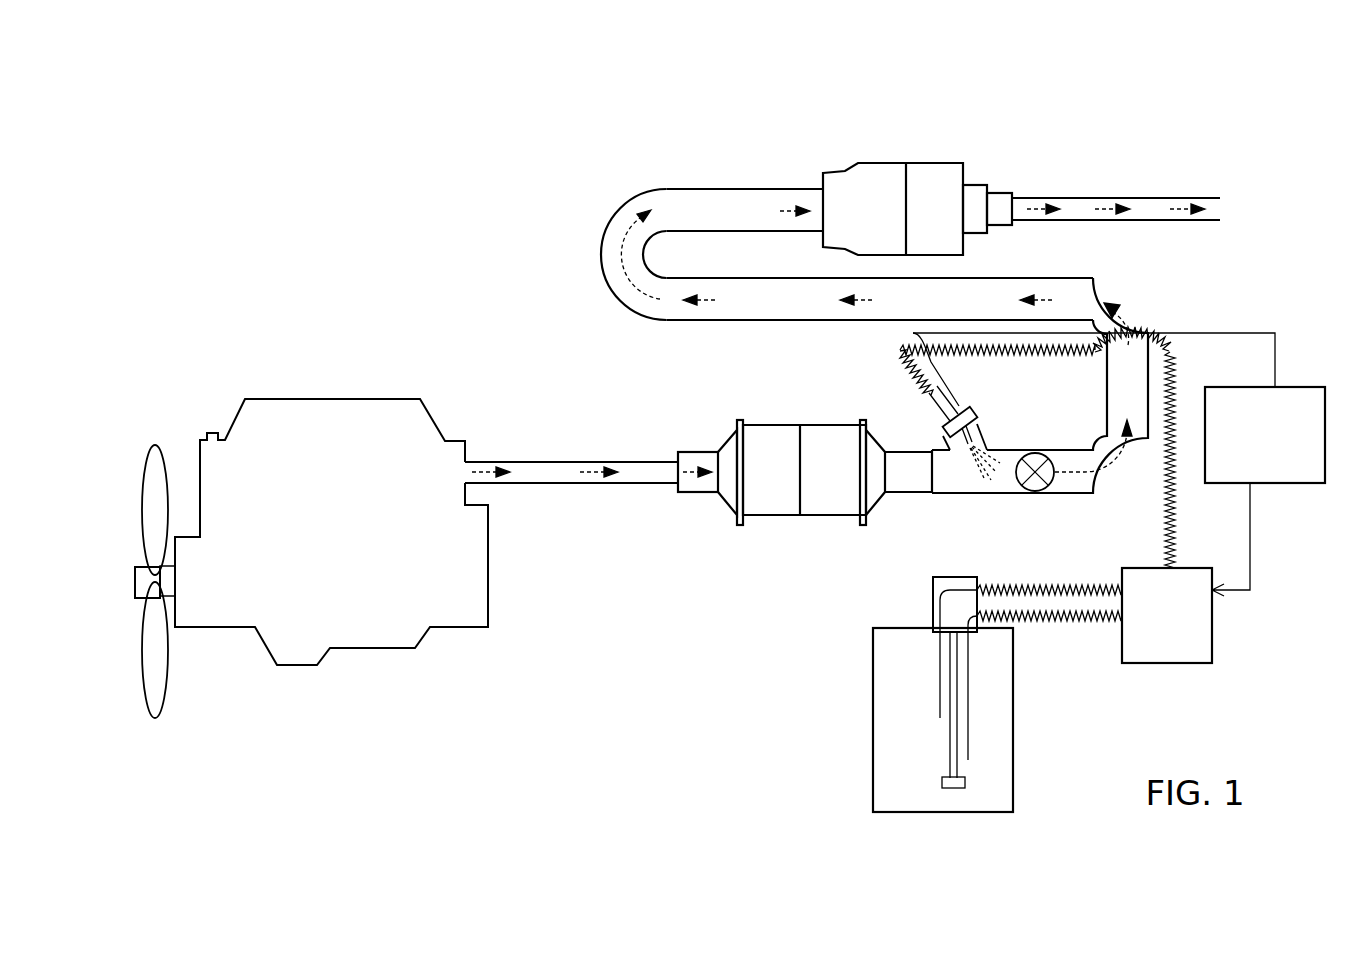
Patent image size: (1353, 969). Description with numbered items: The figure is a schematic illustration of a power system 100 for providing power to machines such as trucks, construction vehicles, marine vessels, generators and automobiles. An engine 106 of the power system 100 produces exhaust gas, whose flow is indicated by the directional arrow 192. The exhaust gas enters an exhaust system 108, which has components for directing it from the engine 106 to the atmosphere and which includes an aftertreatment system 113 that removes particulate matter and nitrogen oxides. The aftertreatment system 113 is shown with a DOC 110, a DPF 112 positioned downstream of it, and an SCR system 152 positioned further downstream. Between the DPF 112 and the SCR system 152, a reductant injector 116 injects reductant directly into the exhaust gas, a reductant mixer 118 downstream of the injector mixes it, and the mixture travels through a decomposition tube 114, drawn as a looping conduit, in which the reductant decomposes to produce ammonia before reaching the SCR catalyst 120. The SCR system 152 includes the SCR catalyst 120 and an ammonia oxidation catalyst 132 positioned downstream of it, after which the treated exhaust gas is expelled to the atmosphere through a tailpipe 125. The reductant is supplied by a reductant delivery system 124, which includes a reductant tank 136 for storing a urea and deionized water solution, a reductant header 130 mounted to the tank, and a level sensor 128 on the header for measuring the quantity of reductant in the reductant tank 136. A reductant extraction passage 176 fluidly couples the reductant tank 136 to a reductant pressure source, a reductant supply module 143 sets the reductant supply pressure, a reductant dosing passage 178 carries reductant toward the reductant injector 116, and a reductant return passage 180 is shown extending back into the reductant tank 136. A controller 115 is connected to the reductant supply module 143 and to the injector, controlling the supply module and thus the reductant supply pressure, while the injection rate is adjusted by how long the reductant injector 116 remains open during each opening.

The power system 100 is at (555, 780).
The engine 106 is at (333, 399).
The exhaust system 108 is at (590, 217).
The DOC 110 is at (777, 515).
The DPF 112 is at (838, 515).
The aftertreatment system 113 is at (788, 622).
The decomposition tube 114 is at (720, 231).
The controller 115 is at (1300, 387).
The reductant injector 116 is at (977, 410).
The reductant mixer 118 is at (1033, 453).
The SCR catalyst 120 is at (872, 163).
The reductant delivery system 124 is at (1087, 768).
The tailpipe 125 is at (1188, 220).
The level sensor 128 is at (953, 790).
The reductant header 130 is at (960, 577).
The ammonia oxidation catalyst 132 is at (937, 163).
The reductant tank 136 is at (1013, 703).
The reductant supply module 143 is at (1140, 663).
The SCR system 152 is at (1203, 117).
The reductant extraction passage 176 is at (1035, 618).
The reductant dosing passage 178 is at (1176, 527).
The reductant return passage 180 is at (1022, 588).
The directional arrow 192 is at (592, 470).